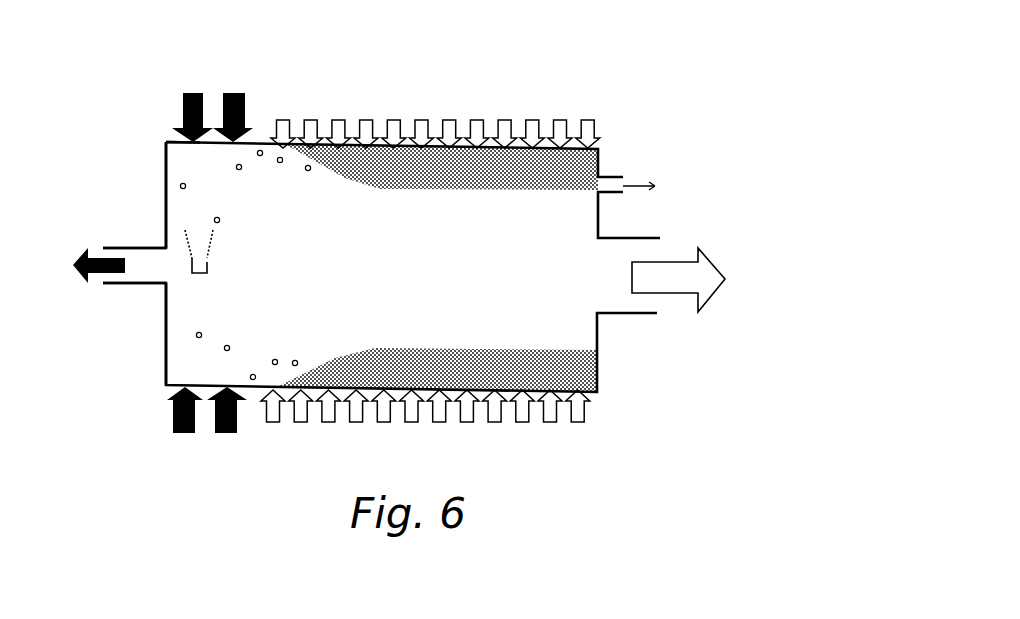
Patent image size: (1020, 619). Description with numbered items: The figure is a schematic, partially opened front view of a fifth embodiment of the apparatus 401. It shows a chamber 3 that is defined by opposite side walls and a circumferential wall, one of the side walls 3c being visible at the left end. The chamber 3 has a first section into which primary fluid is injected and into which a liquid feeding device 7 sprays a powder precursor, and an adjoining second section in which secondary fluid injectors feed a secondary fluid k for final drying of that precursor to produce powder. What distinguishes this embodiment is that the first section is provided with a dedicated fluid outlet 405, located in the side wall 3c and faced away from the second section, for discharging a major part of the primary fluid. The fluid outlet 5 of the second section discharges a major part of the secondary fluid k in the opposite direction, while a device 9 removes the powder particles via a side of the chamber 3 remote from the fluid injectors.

The chamber 3 is at (155, 400).
The side wall 3c is at (162, 352).
The fluid outlet 5 is at (623, 317).
The liquid feeding device 7 is at (197, 262).
The device for removing powder particles 9 is at (650, 108).
The secondary fluid k is at (463, 117).
The apparatus 401 is at (145, 152).
The dedicated fluid outlet 405 is at (132, 248).